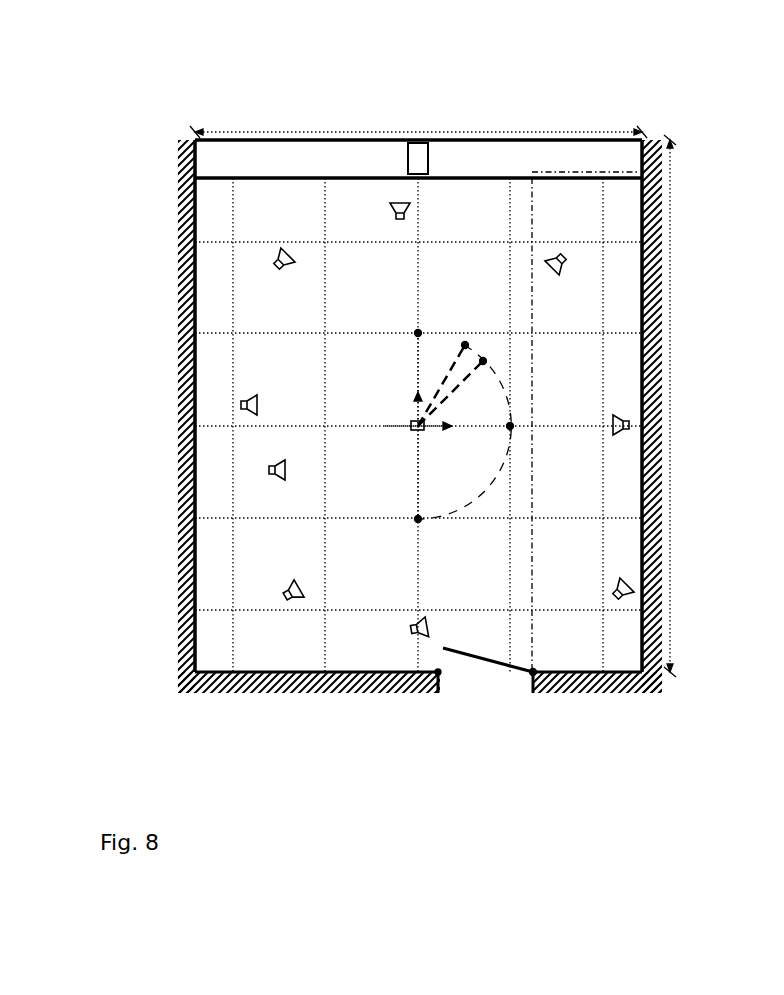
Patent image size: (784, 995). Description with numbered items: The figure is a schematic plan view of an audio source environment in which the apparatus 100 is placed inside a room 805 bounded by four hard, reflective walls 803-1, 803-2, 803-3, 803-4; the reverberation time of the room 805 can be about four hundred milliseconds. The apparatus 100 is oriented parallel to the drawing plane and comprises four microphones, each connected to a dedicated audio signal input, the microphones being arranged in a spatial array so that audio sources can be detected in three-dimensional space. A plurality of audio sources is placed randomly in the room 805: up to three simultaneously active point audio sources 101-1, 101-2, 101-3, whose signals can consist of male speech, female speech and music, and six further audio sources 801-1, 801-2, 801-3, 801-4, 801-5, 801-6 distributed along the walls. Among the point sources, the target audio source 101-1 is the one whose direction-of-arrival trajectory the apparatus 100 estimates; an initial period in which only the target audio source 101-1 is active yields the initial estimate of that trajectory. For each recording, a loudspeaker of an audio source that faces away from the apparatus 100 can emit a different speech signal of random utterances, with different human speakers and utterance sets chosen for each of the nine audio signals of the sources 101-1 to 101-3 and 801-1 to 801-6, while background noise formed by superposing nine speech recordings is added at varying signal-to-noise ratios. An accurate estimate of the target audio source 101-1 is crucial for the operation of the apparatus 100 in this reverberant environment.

The apparatus 100 is at (375, 387).
The target audio source 101-1 is at (398, 205).
The audio source 101-2 is at (563, 262).
The audio source 101-3 is at (625, 420).
The audio source 801-1 is at (628, 588).
The audio source 801-2 is at (418, 633).
The audio source 801-3 is at (292, 598).
The audio source 801-4 is at (280, 475).
The audio source 801-5 is at (255, 410).
The audio source 801-6 is at (290, 262).
The wall 803-1 is at (182, 196).
The wall 803-2 is at (262, 140).
The wall 803-3 is at (655, 272).
The wall 803-4 is at (565, 674).
The room 805 is at (480, 210).